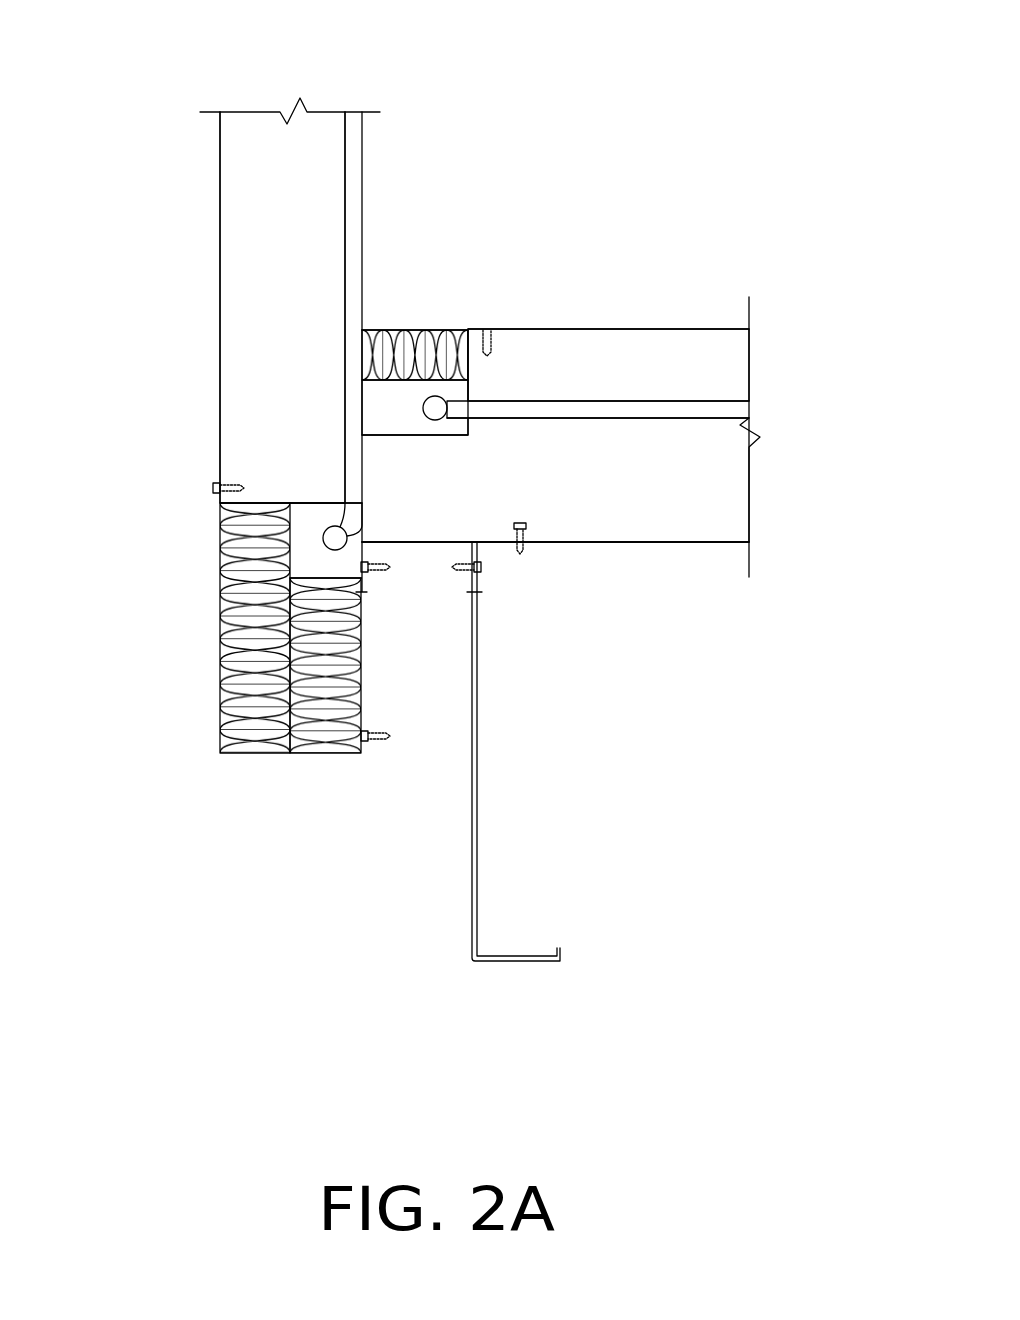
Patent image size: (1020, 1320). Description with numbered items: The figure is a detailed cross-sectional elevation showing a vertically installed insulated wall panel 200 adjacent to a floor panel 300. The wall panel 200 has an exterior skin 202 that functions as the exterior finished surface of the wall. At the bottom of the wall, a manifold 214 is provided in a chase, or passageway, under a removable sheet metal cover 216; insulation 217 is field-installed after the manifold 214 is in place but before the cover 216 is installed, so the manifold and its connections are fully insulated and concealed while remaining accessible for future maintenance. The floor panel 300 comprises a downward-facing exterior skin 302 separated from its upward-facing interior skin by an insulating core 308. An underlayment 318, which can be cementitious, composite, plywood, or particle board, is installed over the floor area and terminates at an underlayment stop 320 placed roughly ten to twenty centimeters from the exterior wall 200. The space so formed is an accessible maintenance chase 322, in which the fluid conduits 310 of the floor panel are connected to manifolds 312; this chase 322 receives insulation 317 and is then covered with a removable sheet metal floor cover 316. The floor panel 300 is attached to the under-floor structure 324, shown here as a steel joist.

The wall panel 200 is at (277, 175).
The exterior skin 202 is at (220, 218).
The manifold 214 is at (323, 540).
The removable sheet metal cover 216 is at (218, 611).
The insulation 217 is at (241, 670).
The floor panel 300 is at (573, 486).
The exterior skin 302 is at (602, 542).
The insulating core 308 is at (633, 477).
The fluid conduits 310 is at (557, 407).
The manifolds 312 is at (435, 396).
The removable sheet metal floor cover 316 is at (435, 330).
The insulation 317 is at (370, 342).
The underlayment 318 is at (598, 367).
The underlayment stop 320 is at (475, 328).
The accessible maintenance chase 322 is at (377, 410).
The under-floor structure 324 is at (473, 790).